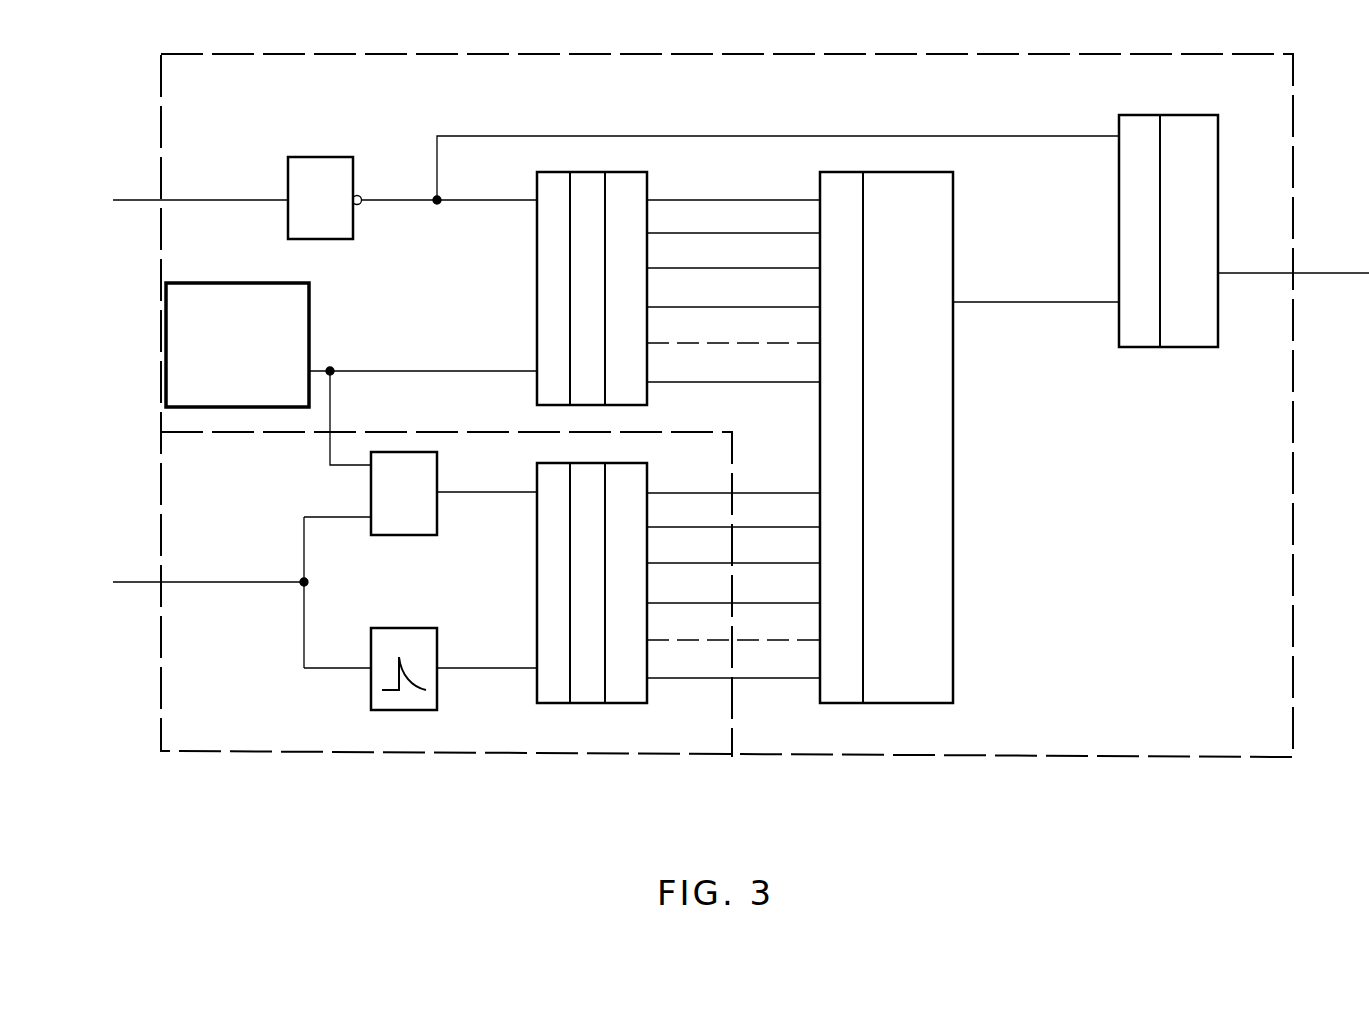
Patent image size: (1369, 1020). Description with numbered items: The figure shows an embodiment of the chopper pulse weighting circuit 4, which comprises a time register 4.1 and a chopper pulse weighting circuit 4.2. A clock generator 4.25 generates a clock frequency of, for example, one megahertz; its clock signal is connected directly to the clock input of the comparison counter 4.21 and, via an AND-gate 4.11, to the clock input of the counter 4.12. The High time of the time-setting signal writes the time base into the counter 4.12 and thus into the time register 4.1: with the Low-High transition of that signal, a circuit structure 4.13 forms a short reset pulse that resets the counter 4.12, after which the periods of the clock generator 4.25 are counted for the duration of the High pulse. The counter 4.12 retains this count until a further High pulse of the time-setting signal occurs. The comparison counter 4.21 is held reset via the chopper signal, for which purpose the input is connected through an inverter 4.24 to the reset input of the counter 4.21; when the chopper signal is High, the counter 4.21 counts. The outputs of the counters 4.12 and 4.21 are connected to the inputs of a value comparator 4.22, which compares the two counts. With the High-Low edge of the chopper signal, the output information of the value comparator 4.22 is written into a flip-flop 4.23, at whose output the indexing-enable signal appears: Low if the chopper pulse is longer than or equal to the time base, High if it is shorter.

The chopper pulse weighting circuit 4 is at (731, 740).
The time register 4.1 is at (230, 732).
The chopper pulse weighting circuit 4.2 is at (1063, 740).
The AND-gate 4.11 is at (406, 525).
The counter 4.12 is at (549, 592).
The circuit structure 4.13 is at (403, 703).
The comparison counter 4.21 is at (553, 275).
The value comparator 4.22 is at (933, 593).
The flip-flop 4.23 is at (1170, 330).
The inverter 4.24 is at (334, 226).
The clock generator 4.25 is at (295, 352).